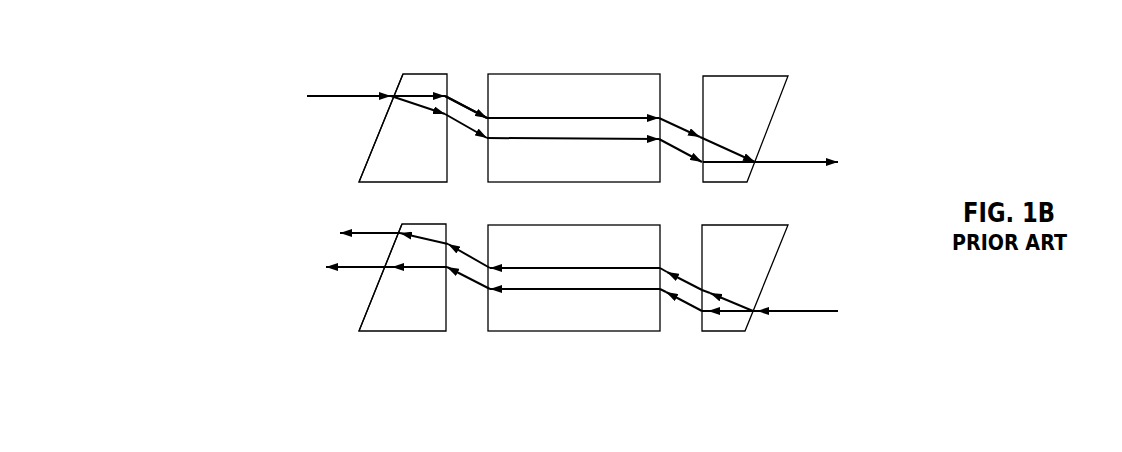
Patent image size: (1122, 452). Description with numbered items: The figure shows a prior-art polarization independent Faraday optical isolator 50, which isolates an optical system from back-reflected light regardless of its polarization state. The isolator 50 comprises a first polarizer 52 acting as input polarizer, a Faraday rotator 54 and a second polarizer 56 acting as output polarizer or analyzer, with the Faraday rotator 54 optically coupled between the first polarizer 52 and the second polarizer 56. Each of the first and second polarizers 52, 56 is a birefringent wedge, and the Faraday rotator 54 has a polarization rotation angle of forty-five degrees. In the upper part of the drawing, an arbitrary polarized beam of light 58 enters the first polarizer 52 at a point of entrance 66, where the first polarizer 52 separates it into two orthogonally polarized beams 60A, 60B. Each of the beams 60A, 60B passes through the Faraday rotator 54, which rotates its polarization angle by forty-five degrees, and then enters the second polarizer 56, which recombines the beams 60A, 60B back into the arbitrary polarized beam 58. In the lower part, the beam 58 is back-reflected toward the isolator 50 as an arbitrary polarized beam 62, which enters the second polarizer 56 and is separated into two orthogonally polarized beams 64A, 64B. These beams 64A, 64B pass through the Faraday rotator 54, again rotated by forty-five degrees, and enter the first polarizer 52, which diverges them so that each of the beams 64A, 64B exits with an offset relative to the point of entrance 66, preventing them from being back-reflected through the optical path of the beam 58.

The optical isolator 50 is at (178, 202).
The first polarizer 52 is at (415, 73).
The Faraday rotator 54 is at (630, 73).
The second polarizer 56 is at (745, 73).
The arbitrary polarized beam of light 58 is at (338, 93).
The orthogonally polarized beam 60A is at (457, 130).
The orthogonally polarized beam 60B is at (473, 107).
The arbitrary polarized beam 62 is at (787, 307).
The orthogonally polarized beam 64A is at (348, 267).
The orthogonally polarized beam 64B is at (368, 232).
The point of entrance 66 is at (392, 92).